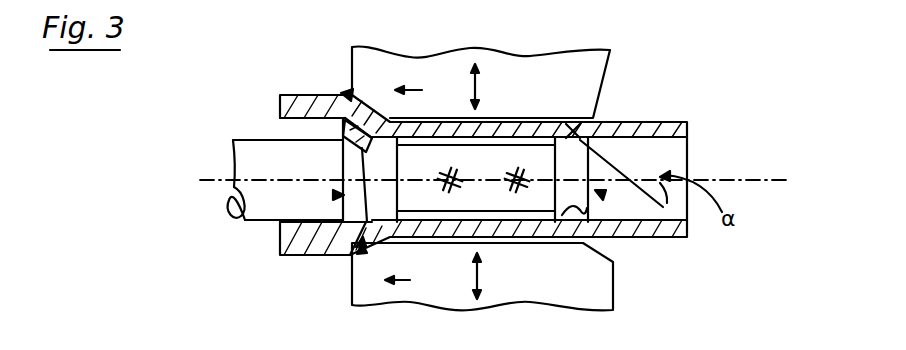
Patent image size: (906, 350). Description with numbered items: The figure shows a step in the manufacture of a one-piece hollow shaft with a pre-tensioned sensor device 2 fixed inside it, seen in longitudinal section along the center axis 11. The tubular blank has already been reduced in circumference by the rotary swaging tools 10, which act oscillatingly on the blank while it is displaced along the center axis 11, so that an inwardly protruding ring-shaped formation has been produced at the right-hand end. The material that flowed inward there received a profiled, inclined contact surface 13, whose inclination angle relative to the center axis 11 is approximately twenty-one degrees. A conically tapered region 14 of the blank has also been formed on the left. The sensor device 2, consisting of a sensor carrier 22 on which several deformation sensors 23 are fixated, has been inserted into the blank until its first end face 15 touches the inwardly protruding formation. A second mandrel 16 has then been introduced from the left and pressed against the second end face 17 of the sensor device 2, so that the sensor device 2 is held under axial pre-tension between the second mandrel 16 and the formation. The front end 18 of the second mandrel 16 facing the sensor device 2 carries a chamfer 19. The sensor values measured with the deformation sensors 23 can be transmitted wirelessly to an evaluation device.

The sensor device 2 is at (503, 150).
The rotary swaging tools 10 is at (598, 72).
The center axis 11 is at (743, 177).
The contact surface 13 is at (598, 122).
The conically tapered region 14 is at (346, 95).
The first end face 15 is at (601, 195).
The second mandrel 16 is at (230, 210).
The second end face 17 is at (343, 167).
The front end 18 is at (333, 195).
The chamfer 19 is at (358, 242).
The sensor carrier 22 is at (480, 193).
The deformation sensors 23 is at (447, 190).